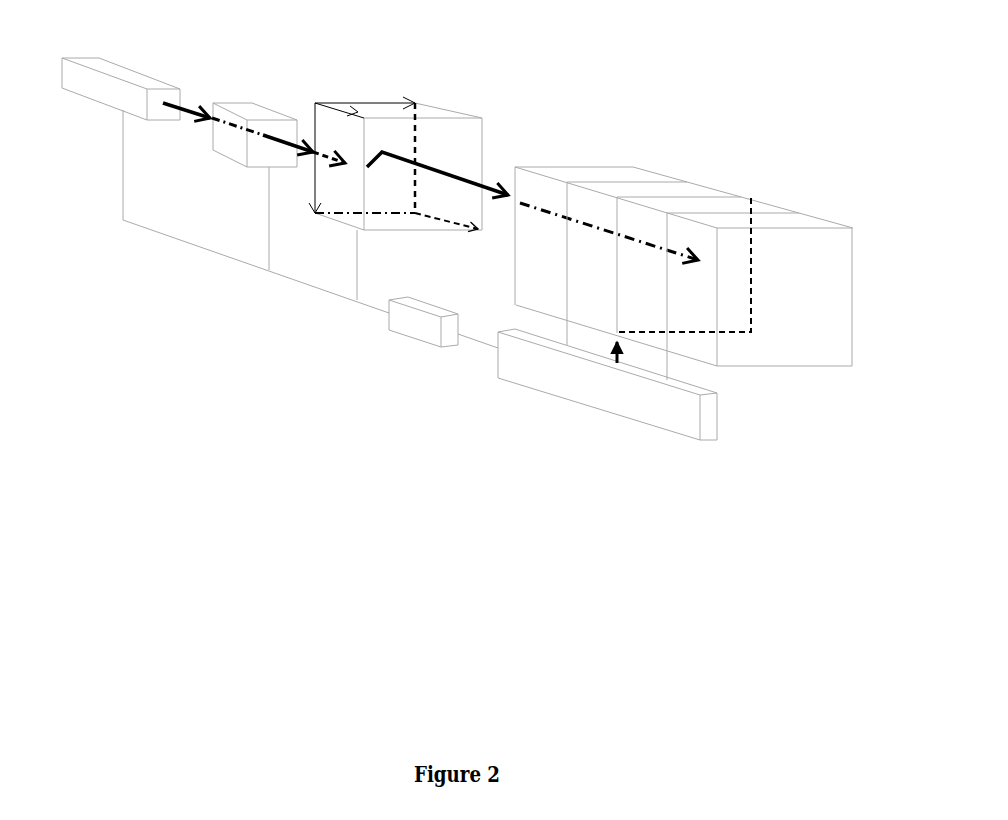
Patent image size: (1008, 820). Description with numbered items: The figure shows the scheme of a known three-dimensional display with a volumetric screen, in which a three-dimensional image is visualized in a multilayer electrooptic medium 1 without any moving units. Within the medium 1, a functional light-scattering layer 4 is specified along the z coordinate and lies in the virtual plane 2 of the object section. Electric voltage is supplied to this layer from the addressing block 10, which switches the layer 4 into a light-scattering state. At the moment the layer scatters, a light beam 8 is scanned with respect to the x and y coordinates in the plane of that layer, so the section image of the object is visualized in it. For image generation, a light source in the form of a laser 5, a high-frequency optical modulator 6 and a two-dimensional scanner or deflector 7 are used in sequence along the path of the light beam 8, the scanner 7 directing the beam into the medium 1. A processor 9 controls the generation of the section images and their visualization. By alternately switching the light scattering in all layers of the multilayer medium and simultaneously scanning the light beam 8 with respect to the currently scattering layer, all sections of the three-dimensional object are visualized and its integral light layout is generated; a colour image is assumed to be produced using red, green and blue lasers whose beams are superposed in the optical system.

The medium 1 is at (734, 305).
The virtual plane of the object section 2 is at (633, 180).
The functional light-scattering layer 4 is at (735, 213).
The light source (laser) 5 is at (128, 84).
The high-frequency optical modulator 6 is at (255, 113).
The two-dimensional scanner (deflector) 7 is at (384, 146).
The light beam 8 is at (585, 223).
The processor 9 is at (403, 326).
The addressing block 10 is at (605, 384).